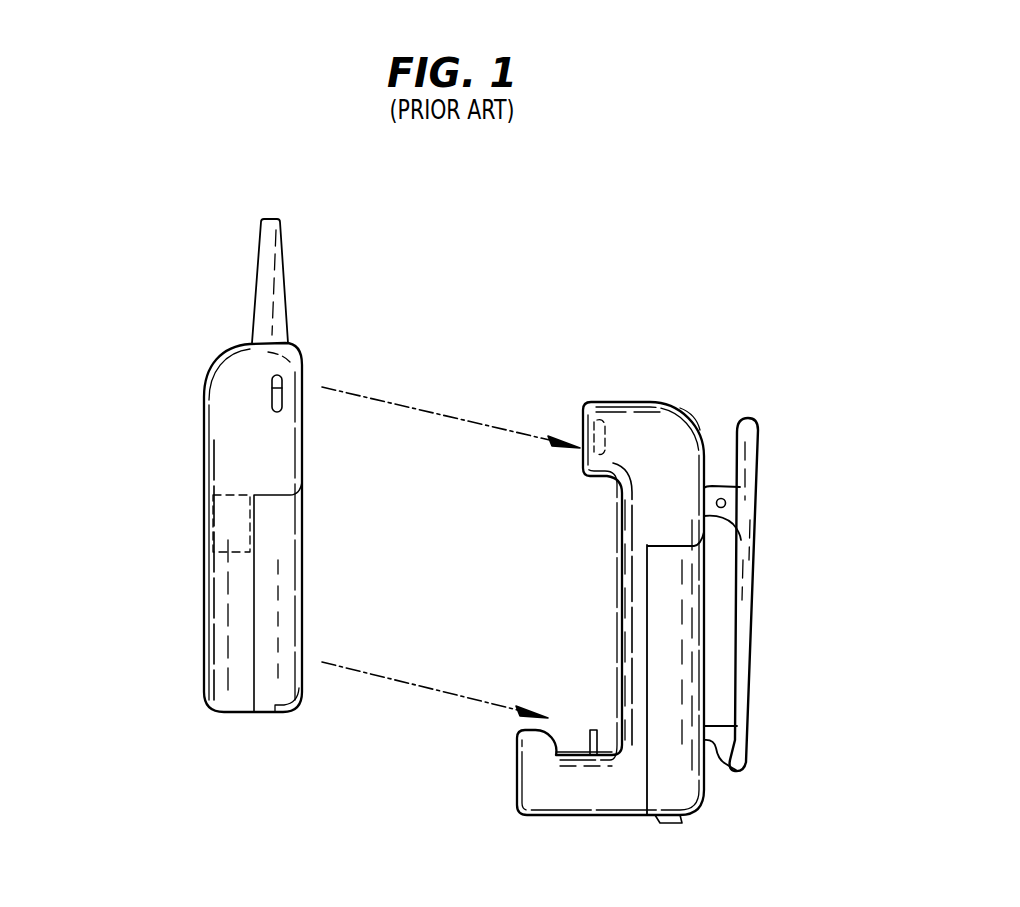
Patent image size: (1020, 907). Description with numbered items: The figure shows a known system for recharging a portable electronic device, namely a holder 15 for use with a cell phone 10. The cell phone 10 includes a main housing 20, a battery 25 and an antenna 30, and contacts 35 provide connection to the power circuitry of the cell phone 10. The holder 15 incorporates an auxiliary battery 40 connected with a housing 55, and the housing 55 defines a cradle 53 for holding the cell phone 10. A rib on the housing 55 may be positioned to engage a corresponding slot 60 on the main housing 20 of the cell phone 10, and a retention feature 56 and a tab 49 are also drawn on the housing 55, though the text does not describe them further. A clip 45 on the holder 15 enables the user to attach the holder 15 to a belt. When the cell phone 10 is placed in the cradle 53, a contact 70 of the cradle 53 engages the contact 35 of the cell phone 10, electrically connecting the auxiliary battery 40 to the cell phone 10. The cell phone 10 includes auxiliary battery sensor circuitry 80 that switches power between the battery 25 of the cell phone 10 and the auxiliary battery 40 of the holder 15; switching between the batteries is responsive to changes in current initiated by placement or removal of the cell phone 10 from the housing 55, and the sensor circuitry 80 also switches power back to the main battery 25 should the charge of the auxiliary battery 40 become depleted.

The cell phone 10 is at (152, 308).
The holder 15 is at (785, 308).
The main housing 20 is at (228, 622).
The battery 25 is at (300, 562).
The antenna 30 is at (268, 254).
The contacts 35 is at (298, 706).
The auxiliary battery 40 is at (700, 625).
The clip 45 is at (750, 492).
The release tab 49 is at (668, 822).
The cradle 53 is at (560, 752).
The housing 55 is at (668, 420).
The retention notch 56 is at (582, 403).
The slot 60 is at (270, 398).
The contact 70 is at (593, 730).
The auxiliary battery sensor circuitry 80 is at (213, 520).